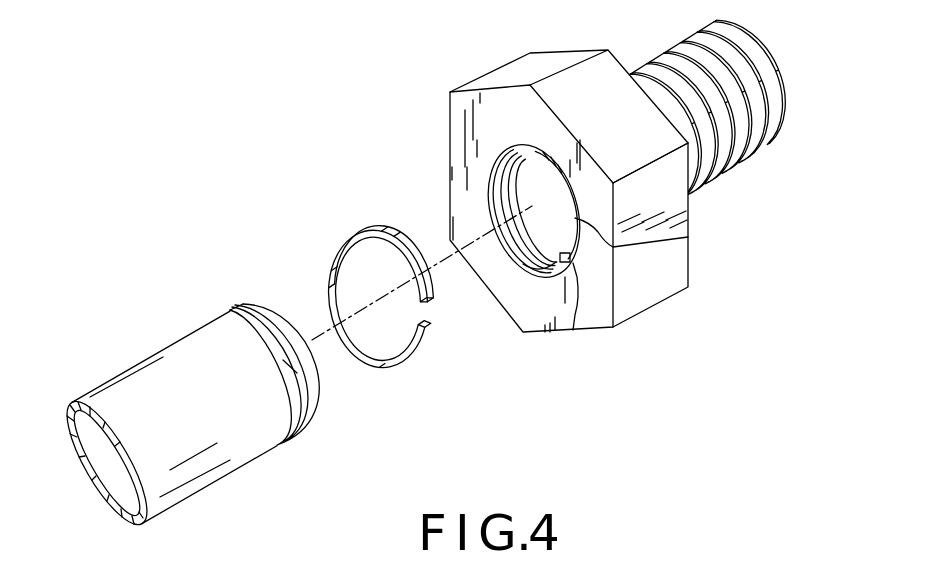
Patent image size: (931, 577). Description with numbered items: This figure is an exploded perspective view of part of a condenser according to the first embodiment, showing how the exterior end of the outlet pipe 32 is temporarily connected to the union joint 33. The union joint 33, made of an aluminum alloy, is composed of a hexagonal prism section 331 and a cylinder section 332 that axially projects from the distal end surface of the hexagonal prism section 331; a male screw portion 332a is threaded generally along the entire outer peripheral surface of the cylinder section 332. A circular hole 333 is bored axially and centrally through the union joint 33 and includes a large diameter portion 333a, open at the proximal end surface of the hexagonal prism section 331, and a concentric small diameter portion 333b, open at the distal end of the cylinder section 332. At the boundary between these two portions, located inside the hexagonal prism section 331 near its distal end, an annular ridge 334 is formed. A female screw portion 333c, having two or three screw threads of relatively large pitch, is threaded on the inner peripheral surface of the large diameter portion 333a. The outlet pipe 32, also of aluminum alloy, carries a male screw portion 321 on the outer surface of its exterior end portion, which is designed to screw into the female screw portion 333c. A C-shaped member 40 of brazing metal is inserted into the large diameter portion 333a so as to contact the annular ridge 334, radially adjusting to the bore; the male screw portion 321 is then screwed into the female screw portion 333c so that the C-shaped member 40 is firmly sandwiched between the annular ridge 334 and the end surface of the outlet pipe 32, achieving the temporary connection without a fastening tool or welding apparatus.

The outlet pipe 32 is at (116, 377).
The male screw portion 321 is at (232, 306).
The C-shaped member 40 is at (405, 356).
The union joint 33 is at (672, 292).
The hexagonal prism section 331 is at (625, 313).
The cylinder section 332 is at (764, 148).
The male screw portion 332a is at (715, 19).
The circular hole 333 is at (490, 190).
The large diameter portion 333a is at (523, 264).
The small diameter portion 333b is at (688, 237).
The female screw portion 333c is at (573, 330).
The annular ridge 334 is at (514, 152).